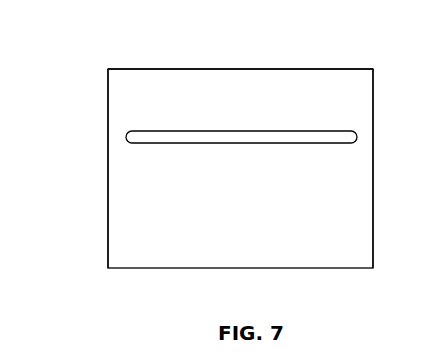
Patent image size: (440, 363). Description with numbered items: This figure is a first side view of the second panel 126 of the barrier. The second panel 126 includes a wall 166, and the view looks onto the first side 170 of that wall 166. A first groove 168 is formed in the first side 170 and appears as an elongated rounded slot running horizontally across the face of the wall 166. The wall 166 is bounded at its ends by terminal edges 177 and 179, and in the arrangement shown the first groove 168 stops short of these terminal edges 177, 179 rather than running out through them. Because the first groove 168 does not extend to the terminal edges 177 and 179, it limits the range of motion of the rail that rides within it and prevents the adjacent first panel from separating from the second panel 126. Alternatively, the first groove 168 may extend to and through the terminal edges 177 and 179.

The second panel 126 is at (105, 43).
The first groove 168 is at (214, 129).
The terminal edge 177 is at (108, 117).
The wall 166 is at (108, 223).
The first side 170 is at (348, 101).
The terminal edge 179 is at (374, 124).